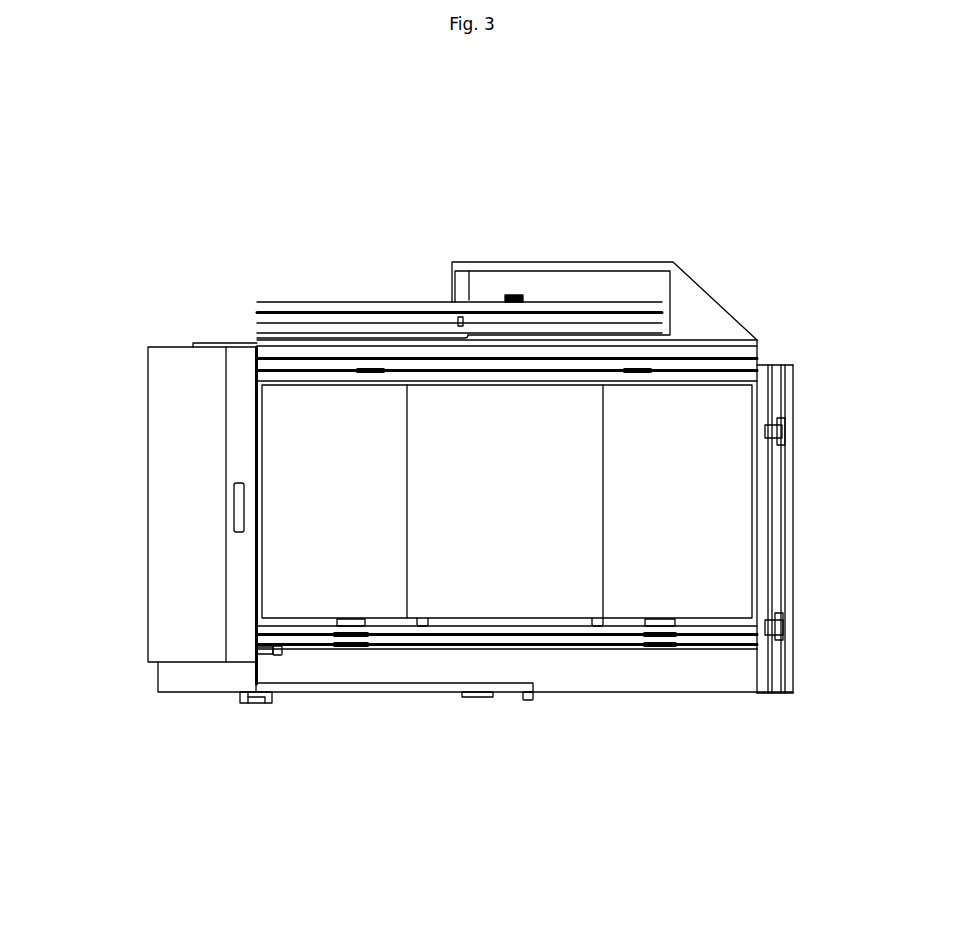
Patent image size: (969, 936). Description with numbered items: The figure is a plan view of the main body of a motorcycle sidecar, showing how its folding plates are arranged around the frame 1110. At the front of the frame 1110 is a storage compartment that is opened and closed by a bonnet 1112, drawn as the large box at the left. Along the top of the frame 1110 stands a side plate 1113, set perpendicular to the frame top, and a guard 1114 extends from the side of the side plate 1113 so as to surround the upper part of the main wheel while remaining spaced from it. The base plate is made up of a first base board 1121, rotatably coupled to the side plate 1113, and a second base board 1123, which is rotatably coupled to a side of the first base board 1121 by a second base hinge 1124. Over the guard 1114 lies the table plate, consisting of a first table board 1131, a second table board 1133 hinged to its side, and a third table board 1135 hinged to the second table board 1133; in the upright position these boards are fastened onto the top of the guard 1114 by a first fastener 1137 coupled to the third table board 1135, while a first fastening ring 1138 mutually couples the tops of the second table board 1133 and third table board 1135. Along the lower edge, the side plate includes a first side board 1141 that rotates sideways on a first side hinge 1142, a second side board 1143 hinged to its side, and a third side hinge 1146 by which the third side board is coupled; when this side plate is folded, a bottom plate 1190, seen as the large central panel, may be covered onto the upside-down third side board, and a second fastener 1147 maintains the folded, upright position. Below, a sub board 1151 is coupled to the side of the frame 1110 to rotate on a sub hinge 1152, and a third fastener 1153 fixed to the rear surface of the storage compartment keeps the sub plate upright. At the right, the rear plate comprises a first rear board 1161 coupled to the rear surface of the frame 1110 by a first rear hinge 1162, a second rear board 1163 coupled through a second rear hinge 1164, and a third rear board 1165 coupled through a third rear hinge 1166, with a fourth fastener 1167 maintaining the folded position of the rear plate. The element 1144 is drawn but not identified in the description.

The frame 1110 is at (717, 668).
The bonnet 1112 is at (152, 480).
The side plate 1113 is at (720, 350).
The guard 1114 is at (603, 266).
The first base board 1121 is at (733, 362).
The second base board 1123 is at (737, 378).
The second base hinge 1124 is at (638, 372).
The first table board 1131 is at (258, 333).
The second table board 1133 is at (258, 313).
The third table board 1135 is at (258, 302).
The first fastener 1137 is at (515, 296).
The first fastening ring 1138 is at (459, 318).
The first side board 1141 is at (715, 640).
The first side hinge 1142 is at (665, 650).
The second side board 1143 is at (785, 622).
The lower guide rail 1144 is at (637, 634).
The third side hinge 1146 is at (638, 626).
The second fastener 1147 is at (281, 655).
The sub board 1151 is at (377, 690).
The sub hinge 1152 is at (476, 697).
The third fastener 1153 is at (247, 703).
The first rear board 1161 is at (763, 693).
The first rear hinge 1162 is at (785, 432).
The second rear board 1163 is at (783, 693).
The second rear hinge 1164 is at (773, 695).
The third rear board 1165 is at (790, 692).
The third rear hinge 1166 is at (783, 365).
The fourth fastener 1167 is at (753, 440).
The bottom plate 1190 is at (727, 517).